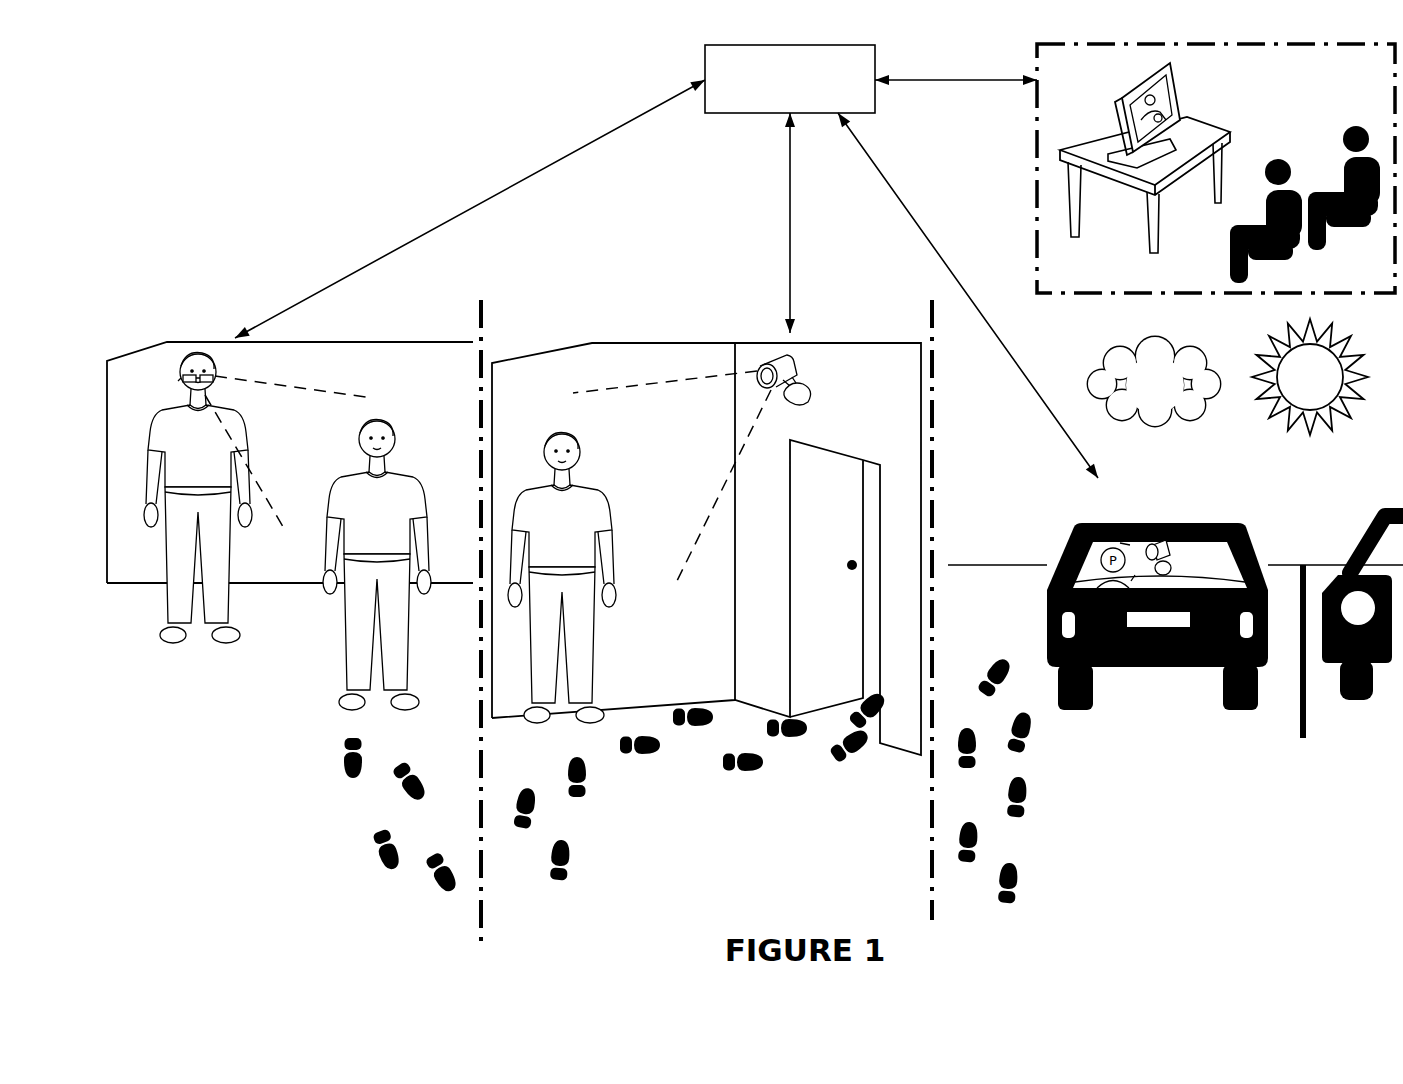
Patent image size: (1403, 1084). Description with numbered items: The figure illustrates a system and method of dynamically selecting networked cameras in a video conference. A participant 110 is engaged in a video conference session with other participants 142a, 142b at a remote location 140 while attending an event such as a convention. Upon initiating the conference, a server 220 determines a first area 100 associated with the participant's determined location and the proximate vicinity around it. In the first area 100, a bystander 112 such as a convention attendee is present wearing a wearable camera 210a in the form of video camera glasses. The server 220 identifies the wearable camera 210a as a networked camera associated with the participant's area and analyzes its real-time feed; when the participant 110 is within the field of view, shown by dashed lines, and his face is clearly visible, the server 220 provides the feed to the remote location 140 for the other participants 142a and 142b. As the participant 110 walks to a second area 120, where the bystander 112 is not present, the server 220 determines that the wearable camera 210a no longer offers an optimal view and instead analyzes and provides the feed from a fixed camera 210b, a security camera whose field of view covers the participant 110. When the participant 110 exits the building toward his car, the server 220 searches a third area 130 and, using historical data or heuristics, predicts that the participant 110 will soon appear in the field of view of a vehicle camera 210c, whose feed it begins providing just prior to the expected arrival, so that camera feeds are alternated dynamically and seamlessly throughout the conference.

The first area 100 is at (162, 338).
The participant 110 is at (1137, 103).
The bystander 112 is at (180, 466).
The second area 120 is at (552, 338).
The third area 130 is at (1052, 353).
The remote location 140 is at (1335, 72).
The other participant 142a is at (1256, 147).
The other participant 142b is at (1315, 117).
The wearable camera 210a is at (184, 379).
The fixed camera 210b is at (802, 379).
The vehicle camera 210c is at (1172, 549).
The server 220 is at (770, 104).